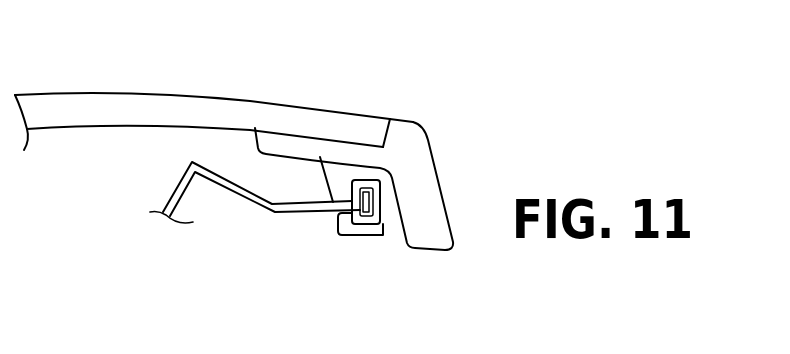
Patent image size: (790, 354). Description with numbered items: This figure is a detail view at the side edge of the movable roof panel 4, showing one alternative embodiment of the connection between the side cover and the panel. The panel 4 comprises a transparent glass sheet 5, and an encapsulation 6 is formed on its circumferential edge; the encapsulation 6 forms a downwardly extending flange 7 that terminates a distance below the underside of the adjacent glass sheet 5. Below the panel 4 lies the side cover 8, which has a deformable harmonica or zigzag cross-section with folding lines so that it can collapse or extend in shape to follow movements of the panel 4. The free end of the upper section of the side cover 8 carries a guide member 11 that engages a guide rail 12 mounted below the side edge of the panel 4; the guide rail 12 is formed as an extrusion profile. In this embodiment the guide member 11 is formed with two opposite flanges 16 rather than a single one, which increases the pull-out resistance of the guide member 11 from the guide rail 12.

The panel 4 is at (270, 89).
The transparent glass sheet 5 is at (143, 112).
The encapsulation 6 is at (398, 140).
The downwardly extending flange 7 is at (429, 203).
The side cover 8 is at (247, 200).
The guide member 11 is at (367, 207).
The guide rail 12 is at (349, 230).
The flanges 16 is at (370, 222).